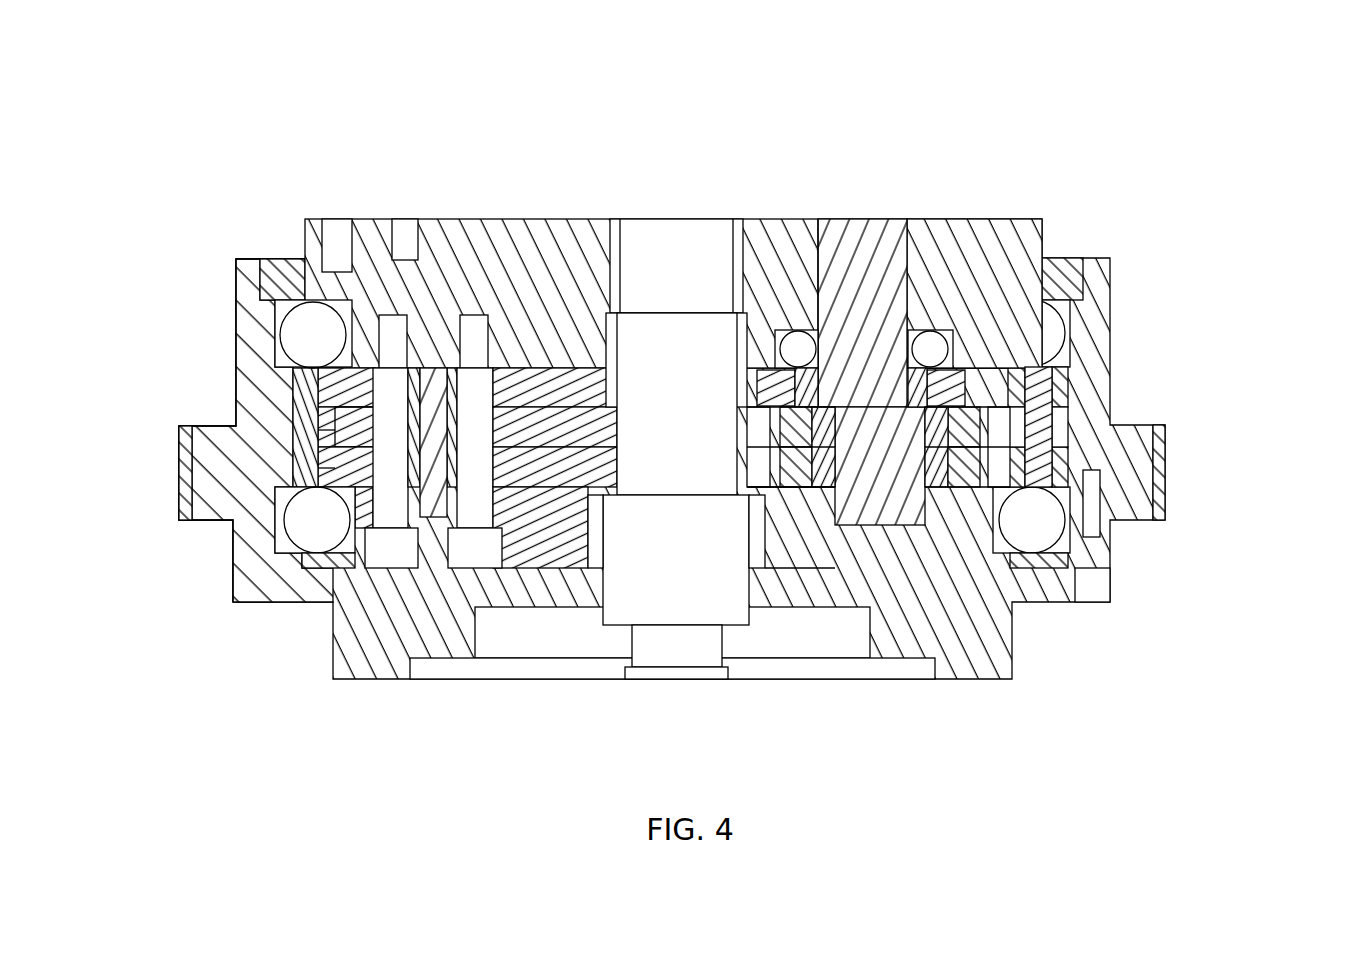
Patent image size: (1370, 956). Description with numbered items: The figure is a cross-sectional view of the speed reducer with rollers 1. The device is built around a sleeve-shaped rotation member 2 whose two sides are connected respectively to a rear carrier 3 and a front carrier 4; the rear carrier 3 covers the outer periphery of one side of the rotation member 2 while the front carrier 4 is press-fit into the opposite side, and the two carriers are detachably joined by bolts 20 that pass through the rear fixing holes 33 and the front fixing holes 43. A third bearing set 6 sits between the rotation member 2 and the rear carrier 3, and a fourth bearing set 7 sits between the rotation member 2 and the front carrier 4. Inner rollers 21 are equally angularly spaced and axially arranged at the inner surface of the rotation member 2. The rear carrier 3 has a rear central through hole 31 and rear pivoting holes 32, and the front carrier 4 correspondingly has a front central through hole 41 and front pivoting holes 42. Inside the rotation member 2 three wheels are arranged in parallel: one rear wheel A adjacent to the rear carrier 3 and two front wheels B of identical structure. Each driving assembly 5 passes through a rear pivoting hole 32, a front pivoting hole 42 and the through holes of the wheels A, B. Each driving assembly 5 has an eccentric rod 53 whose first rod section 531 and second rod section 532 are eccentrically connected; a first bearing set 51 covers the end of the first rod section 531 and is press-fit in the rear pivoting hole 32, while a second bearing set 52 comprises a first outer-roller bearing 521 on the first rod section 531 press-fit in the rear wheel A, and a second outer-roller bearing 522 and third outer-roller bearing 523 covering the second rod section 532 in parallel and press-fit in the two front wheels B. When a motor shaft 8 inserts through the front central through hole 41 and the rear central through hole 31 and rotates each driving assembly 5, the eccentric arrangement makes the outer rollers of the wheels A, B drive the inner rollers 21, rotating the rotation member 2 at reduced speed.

The speed reducer with rollers 1 is at (1055, 178).
The sleeve-shaped rotation member 2 is at (233, 277).
The rear carrier 3 is at (671, 241).
The rear fixing hole 33 is at (335, 236).
The rear central through hole 31 is at (613, 232).
The rear pivoting hole 32 is at (818, 232).
The shaft 8 is at (680, 232).
The driving assembly 5 is at (1038, 422).
The eccentric rod 53 is at (1004, 422).
The first rod section 531 is at (865, 237).
The second rod section 532 is at (870, 498).
The first bearing set 51 is at (932, 349).
The second bearing set 52 is at (1097, 420).
The first outer-roller bearing 521 is at (958, 386).
The second outer-roller bearing 522 is at (978, 424).
The third outer-roller bearing 523 is at (1080, 447).
The rear wheel A is at (345, 385).
The inner roller 21 is at (310, 406).
The front wheel B is at (345, 430).
The front fixing hole 43 is at (392, 570).
The bolt 20 is at (473, 553).
The third bearing set 6 is at (300, 336).
The fourth bearing set 7 is at (300, 521).
The front central through hole 41 is at (757, 553).
The front pivoting hole 42 is at (833, 490).
The front carrier 4 is at (946, 547).